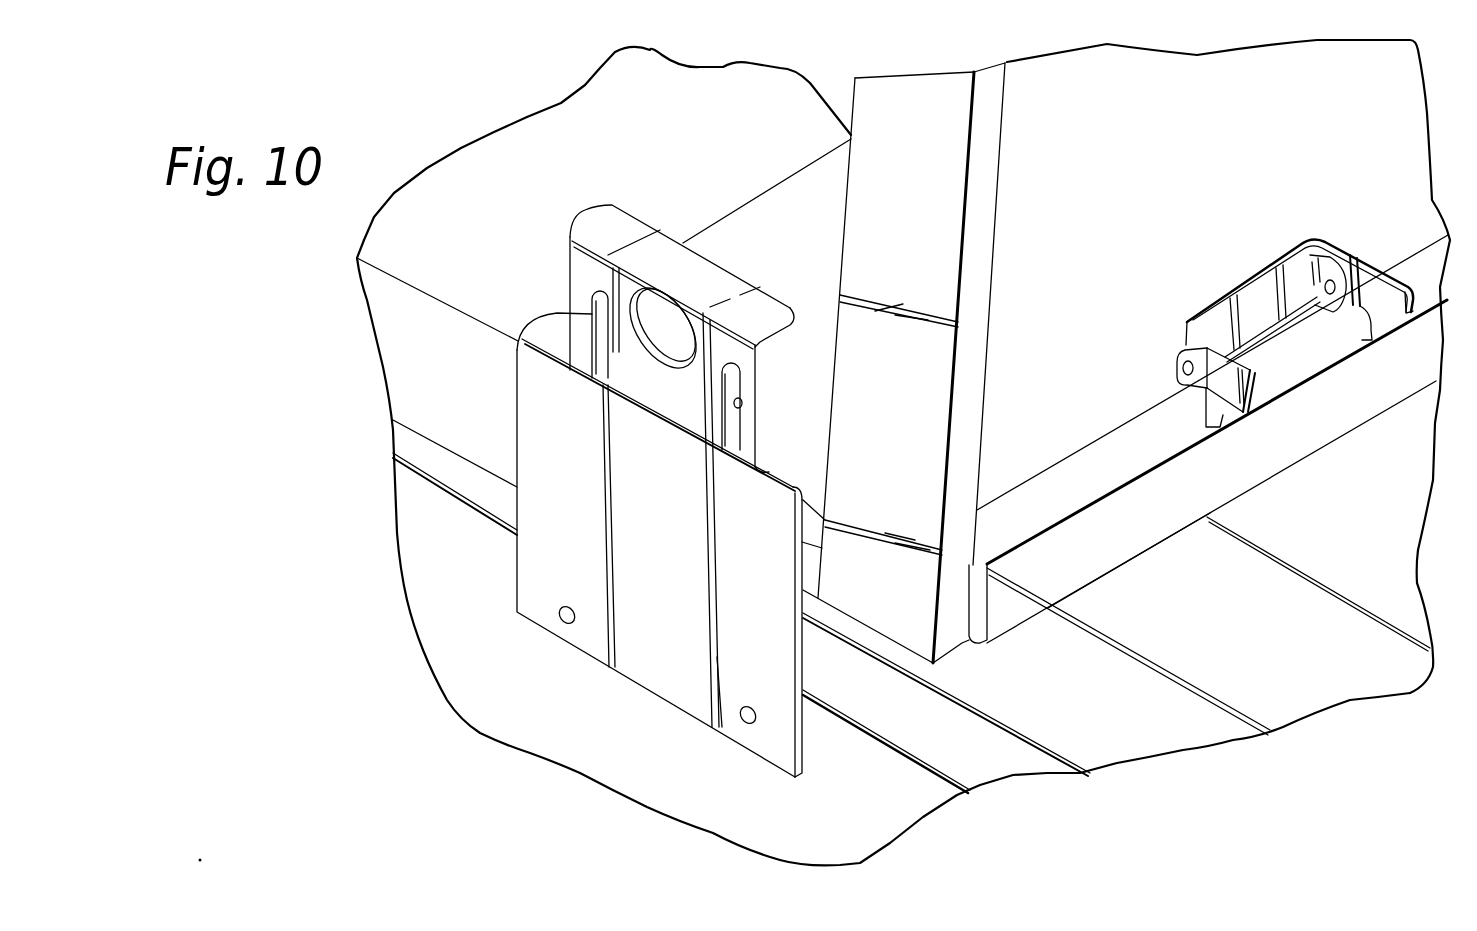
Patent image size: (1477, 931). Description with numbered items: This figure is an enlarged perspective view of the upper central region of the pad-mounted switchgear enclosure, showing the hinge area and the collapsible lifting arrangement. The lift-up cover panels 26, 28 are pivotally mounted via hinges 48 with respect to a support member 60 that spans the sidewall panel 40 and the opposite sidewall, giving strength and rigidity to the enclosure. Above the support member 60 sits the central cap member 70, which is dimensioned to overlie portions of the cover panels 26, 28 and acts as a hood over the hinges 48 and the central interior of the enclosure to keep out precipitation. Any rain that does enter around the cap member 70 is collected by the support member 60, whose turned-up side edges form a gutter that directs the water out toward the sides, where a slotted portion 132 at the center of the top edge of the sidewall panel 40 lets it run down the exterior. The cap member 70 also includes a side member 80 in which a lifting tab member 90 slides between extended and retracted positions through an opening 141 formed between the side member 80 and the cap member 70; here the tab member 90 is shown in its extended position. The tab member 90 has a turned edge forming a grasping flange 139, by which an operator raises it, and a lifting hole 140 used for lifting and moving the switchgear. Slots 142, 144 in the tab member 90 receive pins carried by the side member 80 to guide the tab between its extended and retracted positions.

The lift-up cover panel 26 is at (1252, 101).
The lift-up cover panel 28 is at (568, 130).
The sidewall panel 40 is at (628, 772).
The hinge 48 is at (1250, 252).
The support member 60 is at (1300, 468).
The central cap member 70 is at (807, 190).
The side member 80 is at (540, 551).
The lifting tab member 90 is at (627, 222).
The slotted portion 132 is at (990, 568).
The grasping flange 139 is at (805, 325).
The lifting hole 140 is at (658, 300).
The opening 141 is at (597, 368).
The slot 142 is at (592, 305).
The slot 144 is at (745, 405).